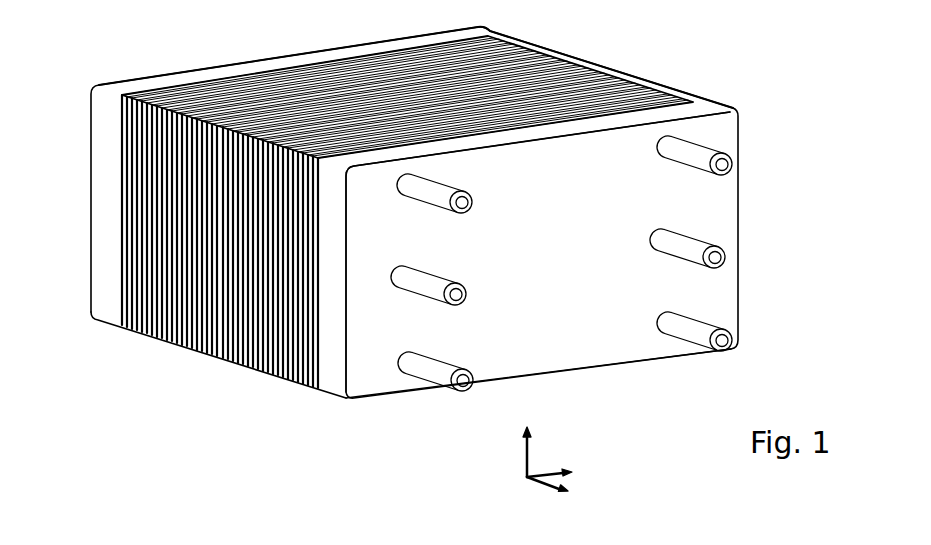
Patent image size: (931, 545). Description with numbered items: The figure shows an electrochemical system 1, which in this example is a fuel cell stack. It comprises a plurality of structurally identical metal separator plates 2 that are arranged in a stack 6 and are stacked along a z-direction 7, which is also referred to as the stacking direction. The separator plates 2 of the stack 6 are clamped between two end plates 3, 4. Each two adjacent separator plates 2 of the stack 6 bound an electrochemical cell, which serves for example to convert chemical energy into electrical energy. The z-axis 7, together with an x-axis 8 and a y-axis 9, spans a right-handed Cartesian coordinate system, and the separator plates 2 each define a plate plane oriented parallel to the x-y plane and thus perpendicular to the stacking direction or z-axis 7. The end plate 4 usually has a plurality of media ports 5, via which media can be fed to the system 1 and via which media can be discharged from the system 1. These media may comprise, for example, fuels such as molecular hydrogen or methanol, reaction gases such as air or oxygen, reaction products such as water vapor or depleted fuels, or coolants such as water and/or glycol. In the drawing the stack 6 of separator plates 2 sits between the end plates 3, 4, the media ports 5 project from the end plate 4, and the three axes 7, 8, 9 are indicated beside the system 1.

The electrochemical system 1 is at (579, 382).
The metal separator plate 2 is at (619, 83).
The end plate 3 is at (215, 75).
The end plate 4 is at (373, 380).
The media port 5 is at (438, 200).
The stack 6 is at (109, 338).
The z-direction 7 is at (538, 487).
The x-axis 8 is at (545, 473).
The y-axis 9 is at (523, 455).